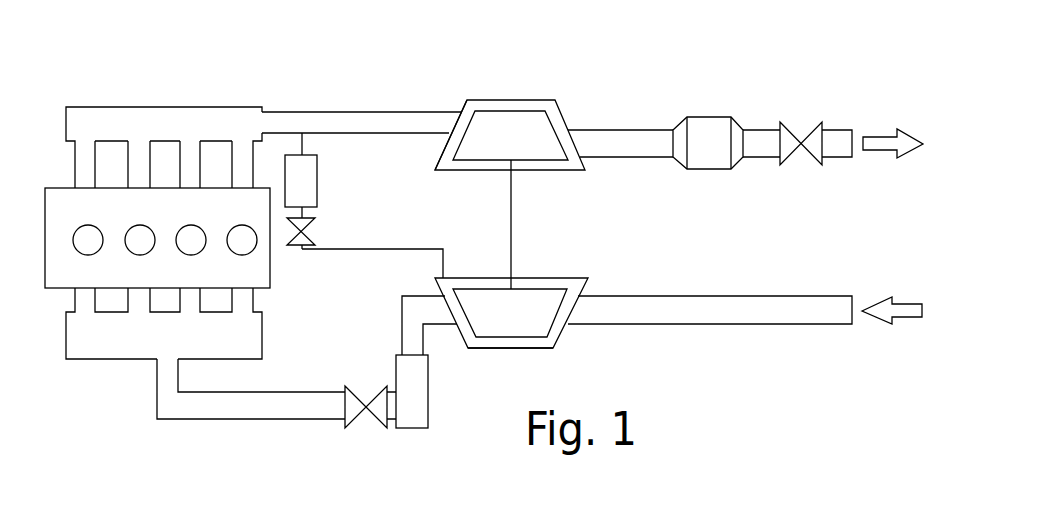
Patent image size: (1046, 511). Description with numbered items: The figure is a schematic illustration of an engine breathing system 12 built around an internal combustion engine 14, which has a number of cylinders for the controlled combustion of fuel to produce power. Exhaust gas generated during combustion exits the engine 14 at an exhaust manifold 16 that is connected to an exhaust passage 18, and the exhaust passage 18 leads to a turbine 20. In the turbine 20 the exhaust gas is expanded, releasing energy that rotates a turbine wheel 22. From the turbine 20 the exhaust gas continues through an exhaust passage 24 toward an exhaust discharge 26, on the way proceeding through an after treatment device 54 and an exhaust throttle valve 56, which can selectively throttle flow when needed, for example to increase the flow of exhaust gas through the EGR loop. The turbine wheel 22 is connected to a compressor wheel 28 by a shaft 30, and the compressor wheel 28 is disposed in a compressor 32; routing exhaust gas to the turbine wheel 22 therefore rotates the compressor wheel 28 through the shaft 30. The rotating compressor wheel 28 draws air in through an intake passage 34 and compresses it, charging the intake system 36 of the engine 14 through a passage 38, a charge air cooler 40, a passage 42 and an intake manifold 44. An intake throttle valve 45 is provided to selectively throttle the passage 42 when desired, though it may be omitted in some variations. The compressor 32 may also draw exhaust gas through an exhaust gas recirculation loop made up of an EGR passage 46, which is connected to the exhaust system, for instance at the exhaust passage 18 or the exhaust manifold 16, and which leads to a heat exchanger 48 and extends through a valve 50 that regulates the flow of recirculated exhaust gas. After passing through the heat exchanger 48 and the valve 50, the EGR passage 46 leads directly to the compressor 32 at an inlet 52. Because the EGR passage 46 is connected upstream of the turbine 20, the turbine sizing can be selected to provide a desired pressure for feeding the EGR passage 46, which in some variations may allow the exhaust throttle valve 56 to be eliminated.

The engine breathing system 12 is at (270, 85).
The internal combustion engine 14 is at (48, 240).
The exhaust manifold 16 is at (170, 108).
The exhaust passage 18 is at (317, 112).
The turbine 20 is at (487, 100).
The turbine wheel 22 is at (452, 152).
The exhaust passage 24 is at (636, 130).
The exhaust discharge 26 is at (877, 137).
The compressor wheel 28 is at (548, 333).
The shaft 30 is at (512, 217).
The compressor 32 is at (487, 348).
The intake passage 34 is at (690, 325).
The intake system 36 is at (315, 424).
The passage 38 is at (423, 340).
The charge air cooler 40 is at (428, 392).
The passage 42 is at (267, 419).
The intake manifold 44 is at (263, 329).
The intake throttle valve 45 is at (375, 429).
The EGR passage 46 is at (303, 141).
The heat exchanger 48 is at (317, 177).
The valve 50 is at (305, 237).
The inlet 52 is at (449, 278).
The after treatment device 54 is at (697, 117).
The exhaust throttle valve 56 is at (800, 122).